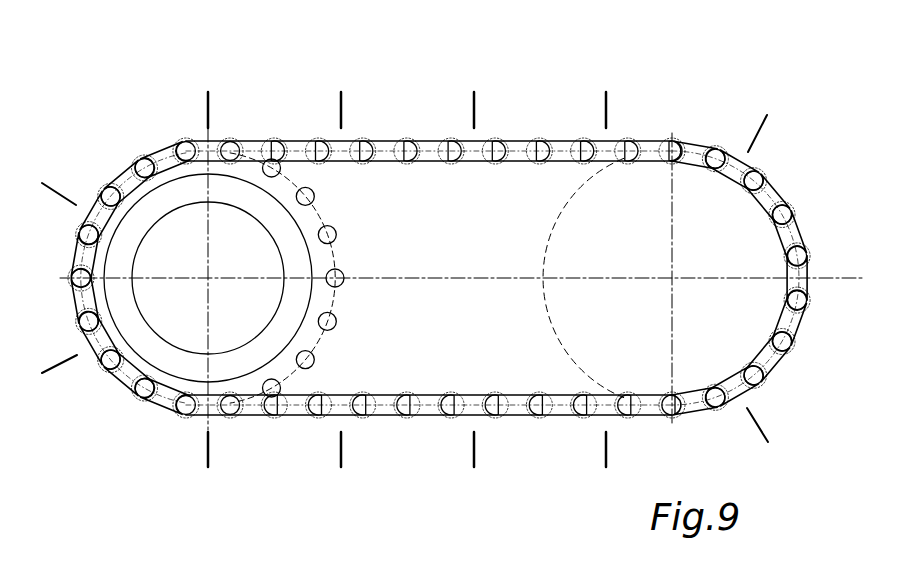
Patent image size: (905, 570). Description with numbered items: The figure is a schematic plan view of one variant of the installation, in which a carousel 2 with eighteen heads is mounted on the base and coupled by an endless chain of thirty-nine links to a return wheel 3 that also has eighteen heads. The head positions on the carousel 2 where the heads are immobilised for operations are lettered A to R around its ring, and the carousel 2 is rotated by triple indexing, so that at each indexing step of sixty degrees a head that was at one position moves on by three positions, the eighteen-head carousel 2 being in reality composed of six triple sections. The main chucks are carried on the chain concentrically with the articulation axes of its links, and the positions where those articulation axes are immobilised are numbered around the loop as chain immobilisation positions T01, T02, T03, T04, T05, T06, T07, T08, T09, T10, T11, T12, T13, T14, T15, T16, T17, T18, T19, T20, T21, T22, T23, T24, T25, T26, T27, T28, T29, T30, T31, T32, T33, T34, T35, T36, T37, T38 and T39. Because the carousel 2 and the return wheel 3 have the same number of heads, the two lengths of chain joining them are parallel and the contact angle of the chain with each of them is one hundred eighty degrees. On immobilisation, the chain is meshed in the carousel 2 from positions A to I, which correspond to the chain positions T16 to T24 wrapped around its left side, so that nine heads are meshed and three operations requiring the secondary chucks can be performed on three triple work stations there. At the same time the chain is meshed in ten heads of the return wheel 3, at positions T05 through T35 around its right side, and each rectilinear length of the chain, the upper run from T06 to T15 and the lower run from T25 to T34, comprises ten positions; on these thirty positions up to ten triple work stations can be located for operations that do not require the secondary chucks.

The carousel 2 is at (227, 247).
The return wheel 3 is at (688, 233).
The chain immobilisation position T01 is at (821, 254).
The chain immobilisation position T02 is at (803, 206).
The chain immobilisation position T03 is at (770, 167).
The chain immobilisation position T04 is at (724, 141).
The chain immobilisation position T05 is at (672, 132).
The chain immobilisation position T06 is at (628, 132).
The chain immobilisation position T07 is at (584, 132).
The chain immobilisation position T08 is at (540, 132).
The chain immobilisation position T09 is at (496, 132).
The chain immobilisation position T10 is at (451, 132).
The chain immobilisation position T11 is at (407, 132).
The chain immobilisation position T12 is at (362, 132).
The chain immobilisation position T13 is at (318, 132).
The chain immobilisation position T14 is at (275, 132).
The chain immobilisation position T15 is at (232, 132).
The chain immobilisation position T16 is at (182, 132).
The chain immobilisation position T17 is at (132, 151).
The chain immobilisation position T18 is at (92, 184).
The chain immobilisation position T19 is at (66, 229).
The chain immobilisation position T20 is at (57, 278).
The chain immobilisation position T21 is at (67, 328).
The chain immobilisation position T22 is at (92, 373).
The chain immobilisation position T23 is at (132, 406).
The chain immobilisation position T24 is at (181, 426).
The chain immobilisation position T25 is at (231, 426).
The chain immobilisation position T26 is at (274, 426).
The chain immobilisation position T27 is at (318, 426).
The chain immobilisation position T28 is at (362, 426).
The chain immobilisation position T29 is at (407, 426).
The chain immobilisation position T30 is at (451, 426).
The chain immobilisation position T31 is at (496, 426).
The chain immobilisation position T32 is at (540, 426).
The chain immobilisation position T33 is at (584, 426).
The chain immobilisation position T34 is at (628, 426).
The chain immobilisation position T35 is at (672, 426).
The chain immobilisation position T36 is at (724, 417).
The chain immobilisation position T37 is at (771, 391).
The chain immobilisation position T38 is at (803, 352).
The chain immobilisation position T39 is at (820, 304).